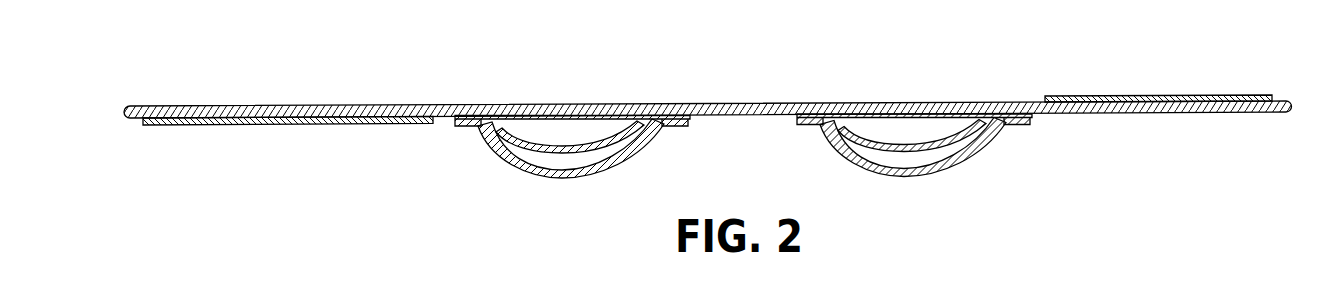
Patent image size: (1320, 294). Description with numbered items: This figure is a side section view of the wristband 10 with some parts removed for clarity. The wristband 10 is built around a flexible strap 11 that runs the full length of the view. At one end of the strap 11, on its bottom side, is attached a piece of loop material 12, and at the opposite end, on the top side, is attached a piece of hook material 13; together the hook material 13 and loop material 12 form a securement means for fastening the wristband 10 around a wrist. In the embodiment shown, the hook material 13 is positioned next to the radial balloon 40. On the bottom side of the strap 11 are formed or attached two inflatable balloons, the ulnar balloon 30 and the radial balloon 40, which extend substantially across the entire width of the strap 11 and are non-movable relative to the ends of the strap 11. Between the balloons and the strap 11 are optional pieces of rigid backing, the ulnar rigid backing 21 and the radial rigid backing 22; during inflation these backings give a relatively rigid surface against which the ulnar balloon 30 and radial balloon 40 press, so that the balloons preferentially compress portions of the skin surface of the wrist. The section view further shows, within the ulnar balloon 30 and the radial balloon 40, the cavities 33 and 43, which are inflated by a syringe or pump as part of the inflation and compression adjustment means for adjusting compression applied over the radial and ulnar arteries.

The wristband 10 is at (406, 68).
The flexible strap 11 is at (742, 102).
The loop material 12 is at (291, 125).
The hook material 13 is at (1156, 95).
The ulnar rigid backing 21 is at (538, 121).
The radial rigid backing 22 is at (914, 160).
The ulnar balloon 30 is at (582, 178).
The cavity 33 is at (607, 150).
The radial balloon 40 is at (913, 176).
The cavity 43 is at (912, 166).